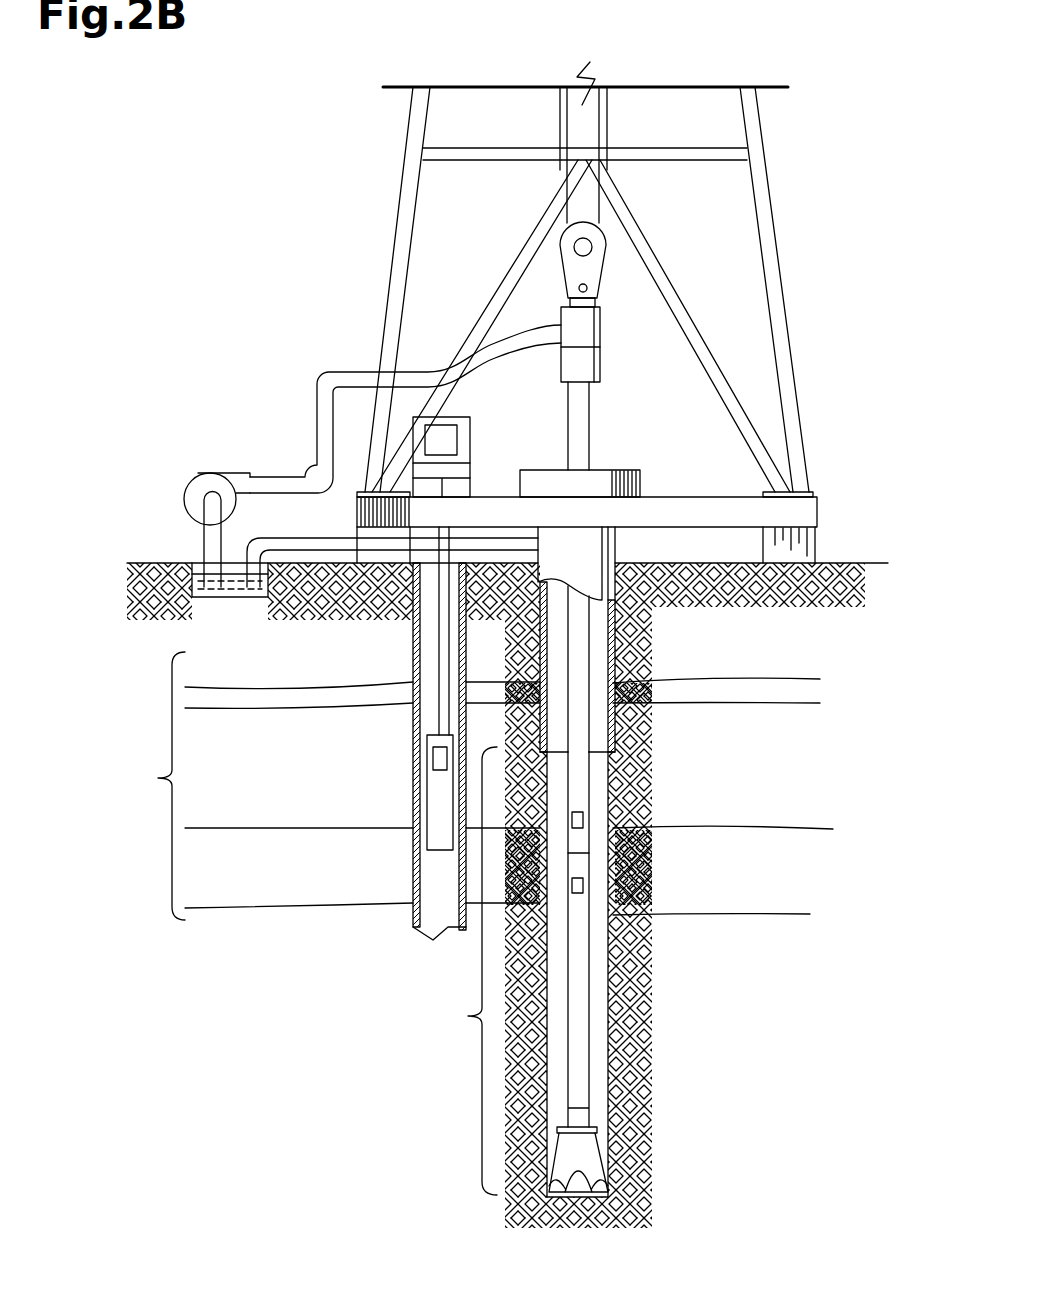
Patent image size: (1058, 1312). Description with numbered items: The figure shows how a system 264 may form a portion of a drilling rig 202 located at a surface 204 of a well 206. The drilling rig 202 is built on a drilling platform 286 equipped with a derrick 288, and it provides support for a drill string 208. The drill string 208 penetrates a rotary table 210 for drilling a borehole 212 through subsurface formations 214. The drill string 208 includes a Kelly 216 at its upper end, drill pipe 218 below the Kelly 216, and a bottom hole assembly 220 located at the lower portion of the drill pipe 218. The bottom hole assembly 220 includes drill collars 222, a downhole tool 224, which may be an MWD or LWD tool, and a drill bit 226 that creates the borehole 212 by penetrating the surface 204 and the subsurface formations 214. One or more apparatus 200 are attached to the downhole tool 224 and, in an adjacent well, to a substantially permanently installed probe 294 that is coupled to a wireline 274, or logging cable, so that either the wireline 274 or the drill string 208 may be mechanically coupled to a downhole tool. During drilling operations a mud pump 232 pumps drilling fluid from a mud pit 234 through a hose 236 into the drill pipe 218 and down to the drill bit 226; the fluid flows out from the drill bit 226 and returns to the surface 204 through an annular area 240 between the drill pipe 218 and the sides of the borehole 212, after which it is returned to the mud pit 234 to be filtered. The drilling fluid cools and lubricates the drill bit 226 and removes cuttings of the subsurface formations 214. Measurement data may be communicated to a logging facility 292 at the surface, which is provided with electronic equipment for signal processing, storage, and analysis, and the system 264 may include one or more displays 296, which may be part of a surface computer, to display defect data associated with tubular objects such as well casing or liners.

The system 264 is at (350, 274).
The drilling rig 202 is at (785, 317).
The derrick 288 is at (773, 218).
The drilling platform 286 is at (818, 502).
The rotary table 210 is at (550, 468).
The Kelly 216 is at (592, 398).
The logging facility 292 is at (462, 417).
The display 296 is at (462, 447).
The hose 236 is at (318, 425).
The mud pump 232 is at (207, 472).
The mud pit 234 is at (236, 598).
The surface 204 is at (838, 563).
The subsurface formations 214 is at (486, 895).
The borehole 212 is at (414, 673).
The well 206 is at (618, 553).
The wireline 274 is at (440, 632).
The probe 294 is at (428, 797).
The apparatus 200 is at (434, 756).
The drill collars 222 is at (614, 735).
The drill string 208 is at (589, 689).
The drill pipe 218 is at (576, 772).
The downhole tool 224 is at (578, 867).
The annular area 240 is at (599, 795).
The bottom hole assembly 220 is at (514, 972).
The drill bit 226 is at (582, 1155).